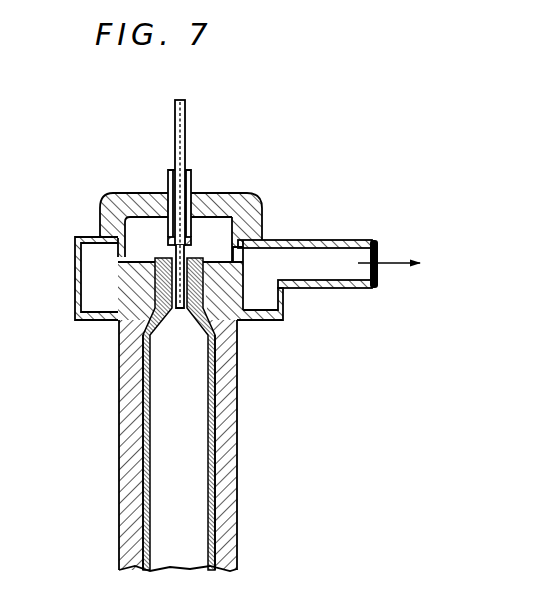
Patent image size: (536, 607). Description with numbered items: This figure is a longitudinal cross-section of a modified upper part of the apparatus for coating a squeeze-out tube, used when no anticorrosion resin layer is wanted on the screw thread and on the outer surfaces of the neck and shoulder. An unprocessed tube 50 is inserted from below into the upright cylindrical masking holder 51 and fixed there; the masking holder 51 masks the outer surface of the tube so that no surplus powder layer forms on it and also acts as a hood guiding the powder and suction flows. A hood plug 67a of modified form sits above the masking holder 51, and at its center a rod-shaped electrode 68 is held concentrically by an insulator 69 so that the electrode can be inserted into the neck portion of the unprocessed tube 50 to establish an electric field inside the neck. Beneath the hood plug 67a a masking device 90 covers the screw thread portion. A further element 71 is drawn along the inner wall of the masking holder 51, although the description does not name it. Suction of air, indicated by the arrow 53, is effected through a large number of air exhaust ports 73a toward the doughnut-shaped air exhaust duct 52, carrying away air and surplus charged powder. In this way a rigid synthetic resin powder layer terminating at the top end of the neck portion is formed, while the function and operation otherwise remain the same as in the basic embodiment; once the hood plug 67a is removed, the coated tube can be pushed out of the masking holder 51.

The unprocessed tube 50 is at (140, 443).
The masking holder 51 is at (228, 413).
The air exhaust duct 52 is at (345, 240).
The suction gas flow arrow 53 is at (392, 262).
The hood plug 67a is at (243, 194).
The rod-shaped electrode 68 is at (104, 202).
The insulator 69 is at (188, 178).
The inner tube lining 71 is at (140, 490).
The air exhaust ports 73a is at (125, 256).
The masking device for the screw thread portion 90 is at (122, 285).